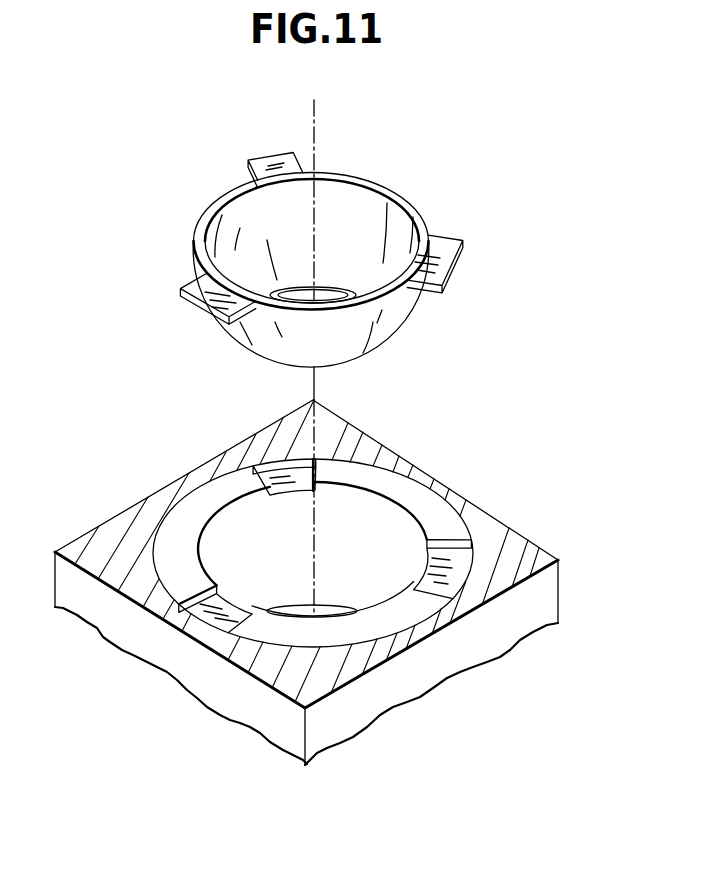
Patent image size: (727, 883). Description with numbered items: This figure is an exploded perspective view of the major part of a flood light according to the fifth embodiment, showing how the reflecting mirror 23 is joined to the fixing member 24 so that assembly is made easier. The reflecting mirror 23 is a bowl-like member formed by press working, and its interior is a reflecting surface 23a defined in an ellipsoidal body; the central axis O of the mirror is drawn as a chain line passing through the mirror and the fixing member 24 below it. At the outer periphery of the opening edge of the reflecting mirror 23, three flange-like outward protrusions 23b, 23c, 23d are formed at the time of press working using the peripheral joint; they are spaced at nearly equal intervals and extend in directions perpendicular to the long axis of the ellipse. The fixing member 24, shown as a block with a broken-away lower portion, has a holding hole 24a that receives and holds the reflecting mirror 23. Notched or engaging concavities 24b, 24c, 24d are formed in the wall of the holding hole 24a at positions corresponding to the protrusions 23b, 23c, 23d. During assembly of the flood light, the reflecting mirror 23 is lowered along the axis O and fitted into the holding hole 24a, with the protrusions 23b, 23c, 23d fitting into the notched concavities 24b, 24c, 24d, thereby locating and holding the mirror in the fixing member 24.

The optical axis O is at (318, 123).
The reflecting mirror 23 is at (302, 231).
The reflecting surface 23a is at (358, 233).
The outward protrusion 23b is at (200, 283).
The outward protrusion 23c is at (270, 167).
The outward protrusion 23d is at (440, 252).
The fixing member 24 is at (311, 572).
The holding hole 24a is at (235, 533).
The notched concavity 24b is at (215, 610).
The notched concavity 24c is at (283, 487).
The notched concavity 24d is at (440, 562).